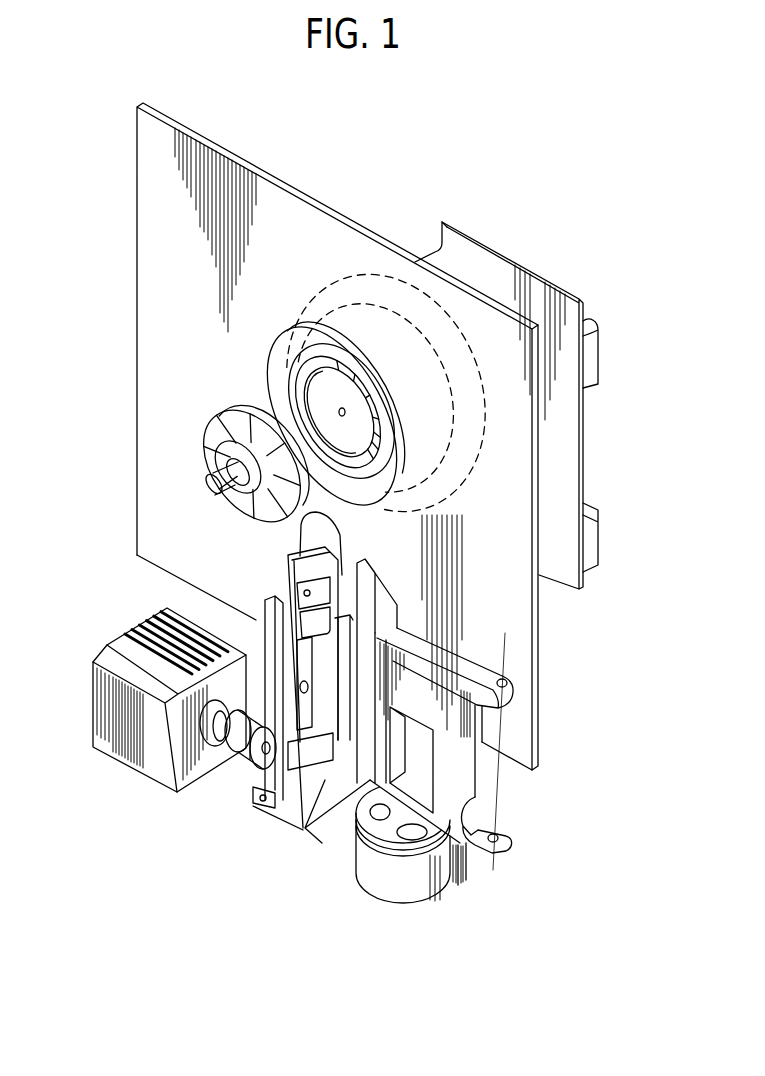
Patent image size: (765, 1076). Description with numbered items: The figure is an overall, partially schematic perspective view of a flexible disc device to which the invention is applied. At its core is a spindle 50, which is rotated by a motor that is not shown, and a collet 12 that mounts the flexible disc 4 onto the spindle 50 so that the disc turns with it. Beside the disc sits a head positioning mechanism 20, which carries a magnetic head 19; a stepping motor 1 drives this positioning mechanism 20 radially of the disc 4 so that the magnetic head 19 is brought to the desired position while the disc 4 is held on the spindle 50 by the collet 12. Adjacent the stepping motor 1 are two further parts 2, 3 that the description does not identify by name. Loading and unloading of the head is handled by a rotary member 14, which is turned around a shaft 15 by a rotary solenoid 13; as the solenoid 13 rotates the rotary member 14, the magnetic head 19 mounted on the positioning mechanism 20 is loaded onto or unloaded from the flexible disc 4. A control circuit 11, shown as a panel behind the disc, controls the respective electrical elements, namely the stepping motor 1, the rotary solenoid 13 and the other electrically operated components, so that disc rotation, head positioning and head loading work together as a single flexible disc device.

The stepping motor 1 is at (125, 648).
The pinion gear 2 is at (217, 747).
The gear 3 is at (260, 775).
The flexible disc 4 is at (147, 218).
The control circuit 11 is at (503, 258).
The collet 12 is at (217, 412).
The rotary solenoid 13 is at (437, 903).
The rotary member 14 is at (430, 655).
The shaft 15 is at (497, 783).
The magnetic head 19 is at (300, 583).
The head positioning mechanism 20 is at (290, 938).
The spindle 50 is at (322, 332).